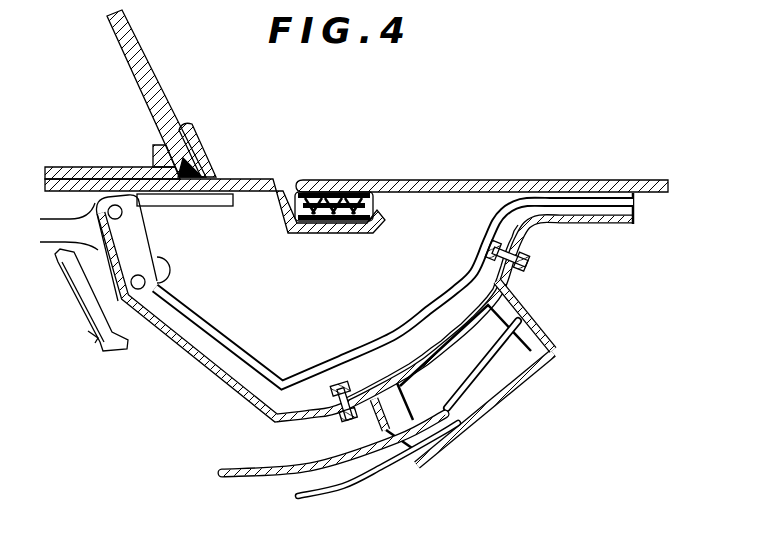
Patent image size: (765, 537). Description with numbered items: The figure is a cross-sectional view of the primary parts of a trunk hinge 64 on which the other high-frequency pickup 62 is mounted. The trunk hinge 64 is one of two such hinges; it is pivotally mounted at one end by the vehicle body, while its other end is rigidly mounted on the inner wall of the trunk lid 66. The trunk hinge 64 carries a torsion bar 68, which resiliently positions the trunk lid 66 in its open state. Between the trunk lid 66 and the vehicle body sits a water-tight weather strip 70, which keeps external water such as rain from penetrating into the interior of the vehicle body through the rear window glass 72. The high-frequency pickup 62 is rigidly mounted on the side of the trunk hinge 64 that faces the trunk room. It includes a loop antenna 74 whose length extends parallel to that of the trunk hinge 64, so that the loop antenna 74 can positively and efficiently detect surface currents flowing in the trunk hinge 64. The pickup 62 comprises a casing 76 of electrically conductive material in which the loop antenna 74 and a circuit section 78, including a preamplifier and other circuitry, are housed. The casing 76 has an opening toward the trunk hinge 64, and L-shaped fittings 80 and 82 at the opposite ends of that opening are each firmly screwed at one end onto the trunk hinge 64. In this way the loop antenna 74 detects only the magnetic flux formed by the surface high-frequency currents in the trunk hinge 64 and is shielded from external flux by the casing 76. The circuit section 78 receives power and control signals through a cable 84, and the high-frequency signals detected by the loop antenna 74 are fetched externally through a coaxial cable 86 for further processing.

The high-frequency pickup 62 is at (498, 393).
The trunk hinge 64 is at (216, 376).
The trunk lid 66 is at (474, 180).
The torsion bar 68 is at (92, 309).
The weather strip 70 is at (337, 192).
The rear window glass 72 is at (163, 77).
The loop antenna 74 is at (520, 310).
The casing 76 is at (557, 350).
The circuit section 78 is at (447, 412).
The L-shaped fitting 80 is at (522, 282).
The L-shaped fitting 82 is at (364, 423).
The cable 84 is at (380, 470).
The coaxial cable 86 is at (237, 476).